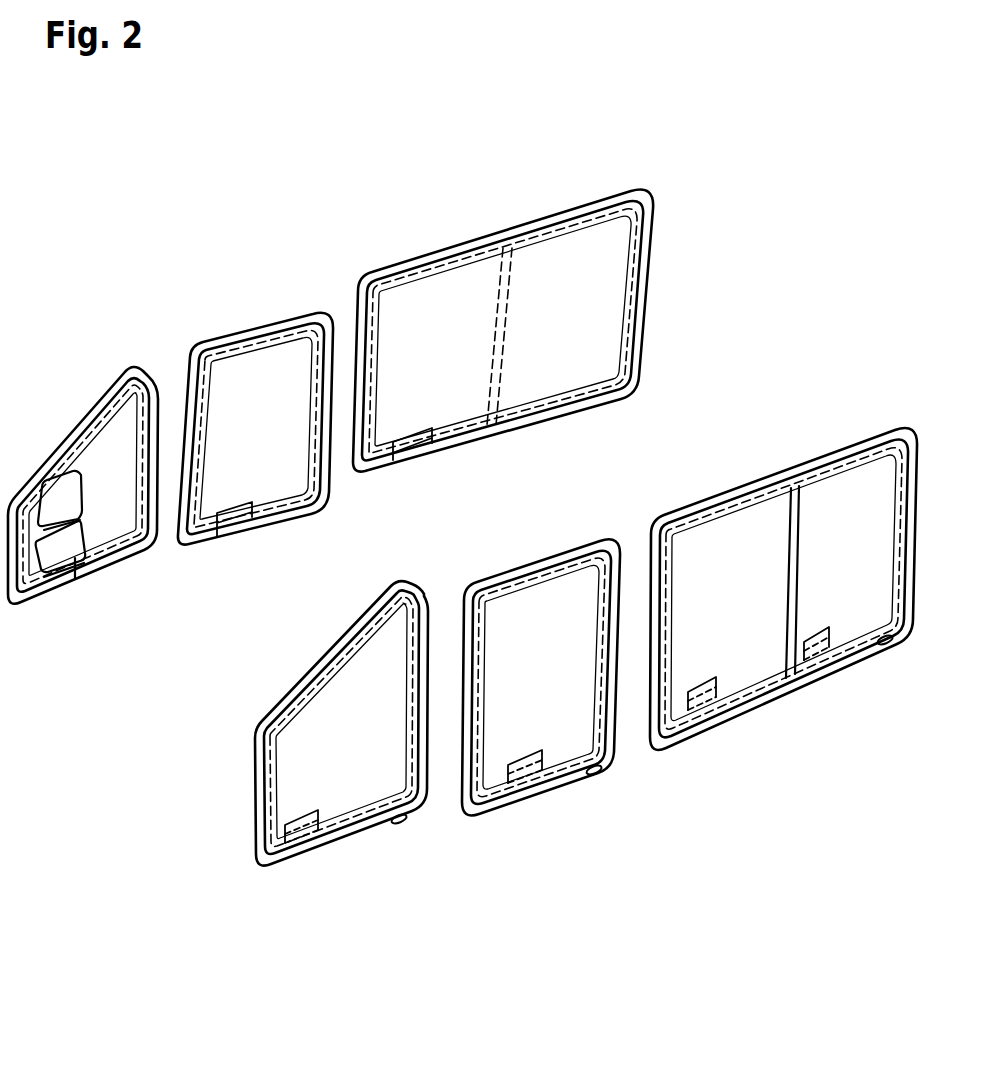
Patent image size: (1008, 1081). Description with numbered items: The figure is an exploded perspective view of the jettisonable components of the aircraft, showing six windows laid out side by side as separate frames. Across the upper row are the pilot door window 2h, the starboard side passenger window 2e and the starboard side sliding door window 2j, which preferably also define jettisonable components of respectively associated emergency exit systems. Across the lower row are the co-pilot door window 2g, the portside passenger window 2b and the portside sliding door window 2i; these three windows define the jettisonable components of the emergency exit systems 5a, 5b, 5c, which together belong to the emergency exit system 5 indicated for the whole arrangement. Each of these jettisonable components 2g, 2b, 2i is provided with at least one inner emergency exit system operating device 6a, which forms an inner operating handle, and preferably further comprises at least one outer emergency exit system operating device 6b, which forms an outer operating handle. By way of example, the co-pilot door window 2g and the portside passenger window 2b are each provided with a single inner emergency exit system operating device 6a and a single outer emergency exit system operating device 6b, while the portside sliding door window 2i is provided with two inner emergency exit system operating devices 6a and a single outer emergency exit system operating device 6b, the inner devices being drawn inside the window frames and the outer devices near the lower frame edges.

The portside passenger window 2b is at (550, 738).
The starboard side passenger window 2e is at (258, 375).
The co-pilot door window 2g is at (332, 800).
The pilot door window 2h is at (110, 437).
The portside sliding door window 2i is at (766, 653).
The starboard side sliding door window 2j is at (440, 296).
The emergency exit system 5 is at (752, 312).
The emergency exit system 5a is at (258, 681).
The emergency exit system 5b is at (536, 537).
The emergency exit system 5c is at (750, 464).
The inner emergency exit system operating device 6a is at (304, 800).
The outer emergency exit system operating device 6b is at (403, 838).